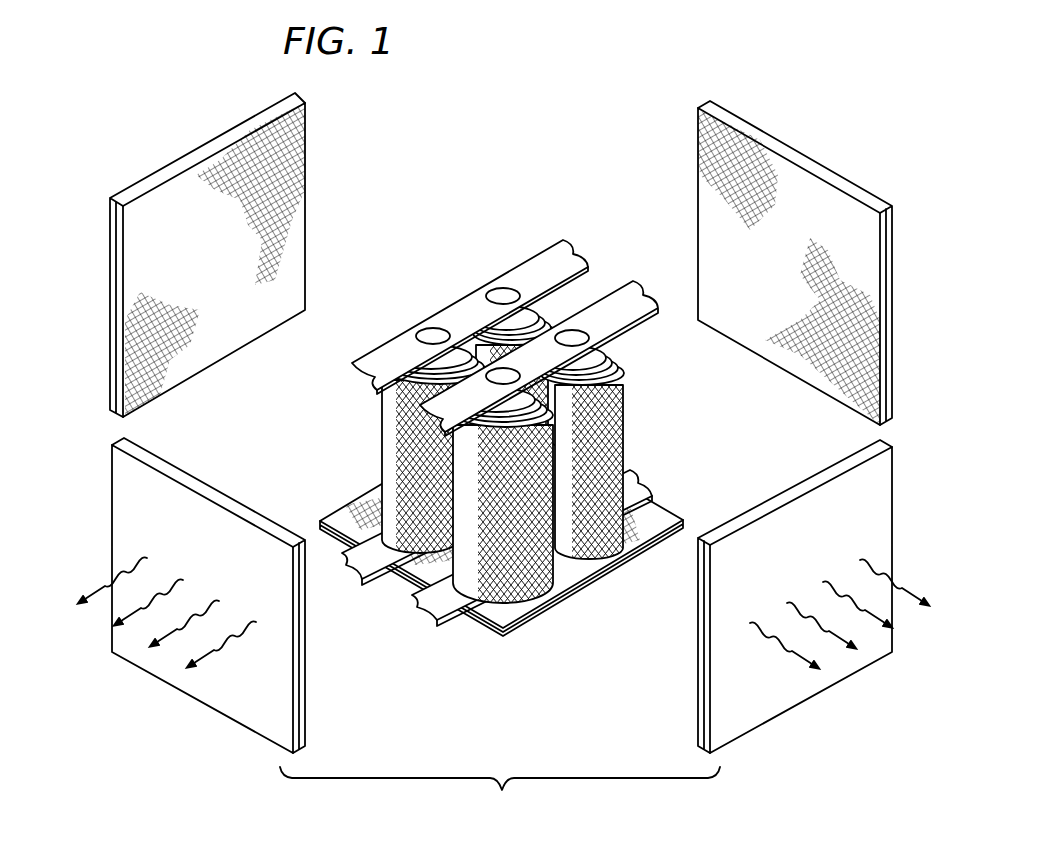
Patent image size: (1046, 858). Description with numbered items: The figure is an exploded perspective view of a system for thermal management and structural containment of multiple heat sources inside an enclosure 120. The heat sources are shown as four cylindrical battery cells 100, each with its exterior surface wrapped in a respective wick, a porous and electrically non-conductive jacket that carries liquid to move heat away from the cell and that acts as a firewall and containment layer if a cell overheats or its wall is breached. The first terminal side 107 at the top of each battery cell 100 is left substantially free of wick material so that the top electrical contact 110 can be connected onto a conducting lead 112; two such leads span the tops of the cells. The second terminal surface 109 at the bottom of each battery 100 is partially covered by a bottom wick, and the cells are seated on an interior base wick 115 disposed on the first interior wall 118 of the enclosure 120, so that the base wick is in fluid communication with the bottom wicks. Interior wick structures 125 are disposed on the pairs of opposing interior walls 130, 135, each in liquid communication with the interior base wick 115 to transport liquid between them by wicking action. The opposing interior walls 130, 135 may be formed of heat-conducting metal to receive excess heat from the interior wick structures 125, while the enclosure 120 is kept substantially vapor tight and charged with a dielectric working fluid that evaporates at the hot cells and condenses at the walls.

The battery cell 100 is at (506, 442).
The first terminal side 107 is at (622, 355).
The second terminal surface 109 is at (572, 552).
The top electrical contact 110 is at (503, 296).
The conducting lead 112 is at (492, 297).
The interior base wick 115 is at (507, 600).
The first interior wall 118 is at (500, 634).
The enclosure 120 is at (776, 78).
The interior wick structure 125 is at (296, 161).
The interior wall 130 is at (852, 180).
The interior wall 135 is at (197, 151).